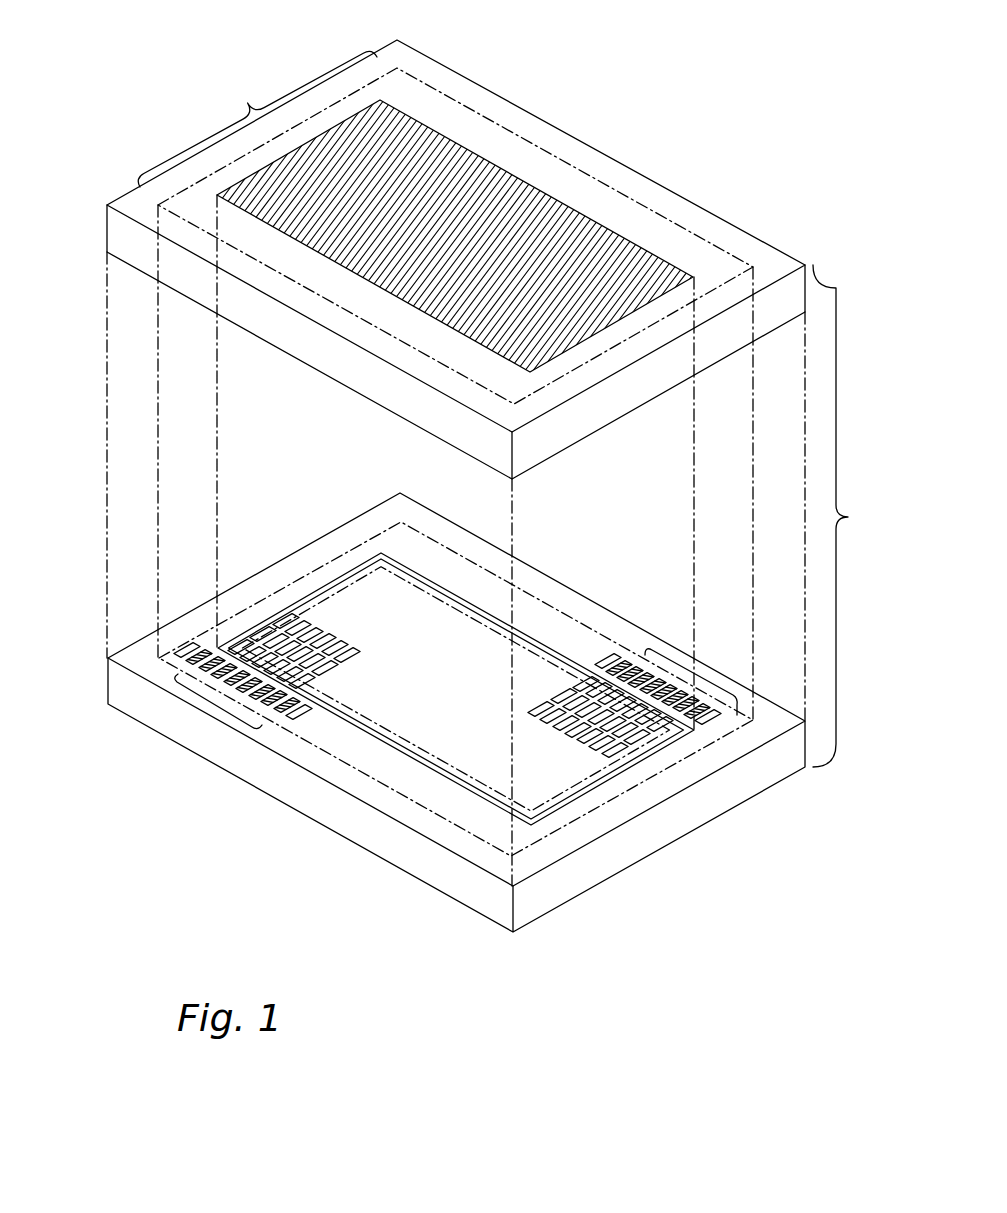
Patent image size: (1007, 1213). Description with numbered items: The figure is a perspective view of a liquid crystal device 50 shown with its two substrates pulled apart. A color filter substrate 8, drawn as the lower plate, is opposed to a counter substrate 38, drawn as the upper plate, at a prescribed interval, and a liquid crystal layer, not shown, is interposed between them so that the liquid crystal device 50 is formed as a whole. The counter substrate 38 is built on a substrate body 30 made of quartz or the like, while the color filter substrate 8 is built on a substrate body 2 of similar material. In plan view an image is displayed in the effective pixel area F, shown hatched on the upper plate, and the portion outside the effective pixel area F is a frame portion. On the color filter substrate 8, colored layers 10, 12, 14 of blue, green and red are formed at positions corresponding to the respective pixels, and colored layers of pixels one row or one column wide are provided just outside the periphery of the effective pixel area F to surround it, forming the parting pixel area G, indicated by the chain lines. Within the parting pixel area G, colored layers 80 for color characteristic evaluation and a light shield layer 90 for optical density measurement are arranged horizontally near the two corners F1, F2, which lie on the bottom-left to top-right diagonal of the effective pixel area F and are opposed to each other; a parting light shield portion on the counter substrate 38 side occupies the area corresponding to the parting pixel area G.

The substrate body 2 is at (292, 790).
The color filter substrate 8 is at (430, 698).
The blue colored layers 10 is at (456, 644).
The green colored layers 12 is at (456, 689).
The red colored layers 14 is at (420, 617).
The substrate body 30 is at (143, 257).
The counter substrate 38 is at (458, 259).
The liquid crystal device 50 is at (501, 540).
The colored layers for color characteristic evaluation 80 is at (455, 687).
The light shield layer for optical density measurement 90 is at (218, 707).
The effective pixel area F is at (452, 163).
The parting pixel area G is at (445, 227).
The corner F1 is at (228, 637).
The corner F2 is at (727, 716).